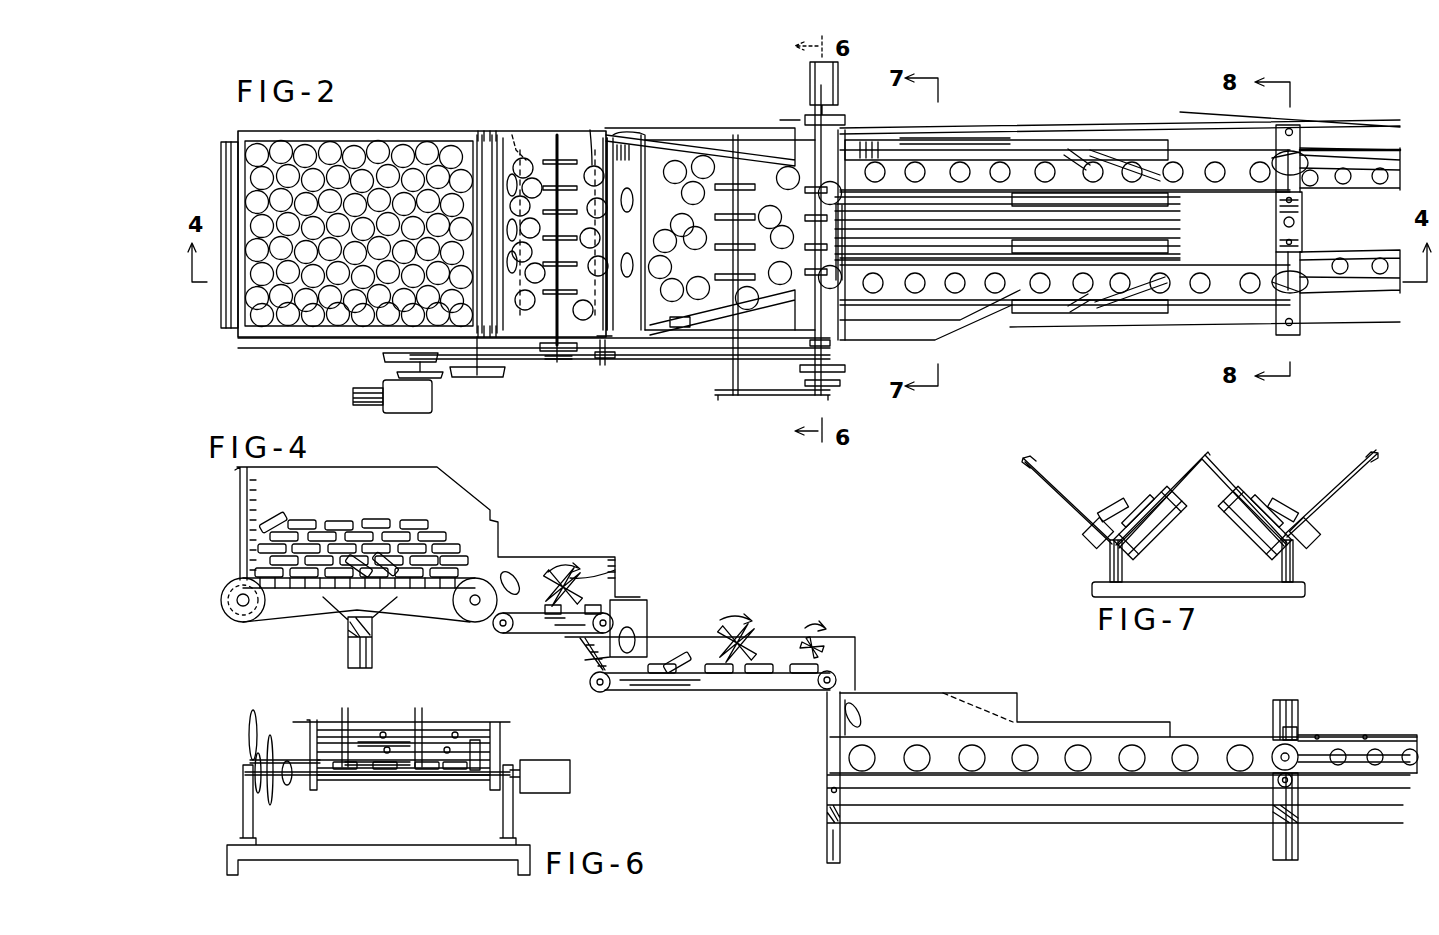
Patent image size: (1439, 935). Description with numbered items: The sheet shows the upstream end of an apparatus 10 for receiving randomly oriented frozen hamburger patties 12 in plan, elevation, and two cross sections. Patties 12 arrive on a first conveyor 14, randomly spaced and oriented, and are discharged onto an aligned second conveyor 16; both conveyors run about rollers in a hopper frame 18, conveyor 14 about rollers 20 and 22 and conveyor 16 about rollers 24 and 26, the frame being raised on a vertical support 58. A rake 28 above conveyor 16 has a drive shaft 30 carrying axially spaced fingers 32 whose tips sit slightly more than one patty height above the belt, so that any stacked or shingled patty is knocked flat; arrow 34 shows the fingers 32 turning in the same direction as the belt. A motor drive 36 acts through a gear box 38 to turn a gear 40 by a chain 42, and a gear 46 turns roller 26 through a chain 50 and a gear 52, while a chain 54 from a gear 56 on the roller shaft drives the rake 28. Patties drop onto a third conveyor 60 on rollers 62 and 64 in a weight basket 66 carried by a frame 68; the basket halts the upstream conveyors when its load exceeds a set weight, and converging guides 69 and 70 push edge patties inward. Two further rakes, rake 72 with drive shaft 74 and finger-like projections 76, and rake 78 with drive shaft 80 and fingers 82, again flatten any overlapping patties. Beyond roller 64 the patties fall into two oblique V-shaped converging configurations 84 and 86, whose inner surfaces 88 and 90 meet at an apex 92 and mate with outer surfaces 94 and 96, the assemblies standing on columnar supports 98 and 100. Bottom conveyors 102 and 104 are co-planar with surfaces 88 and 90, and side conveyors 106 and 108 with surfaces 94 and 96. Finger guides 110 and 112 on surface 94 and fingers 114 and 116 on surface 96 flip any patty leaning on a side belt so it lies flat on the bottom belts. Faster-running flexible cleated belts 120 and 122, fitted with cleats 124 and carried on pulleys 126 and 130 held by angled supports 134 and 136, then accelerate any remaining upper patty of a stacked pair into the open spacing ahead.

In FIG. 2, the apparatus 10 is at (990, 108).
In FIG. 4, the apparatus 10 is at (862, 575).
In FIG. 2, the frozen hamburger patties 12 is at (376, 150).
In FIG. 4, the frozen hamburger patties 12 is at (330, 515).
In FIG. 6, the frozen hamburger patties 12 is at (418, 770).
In FIG. 7, the frozen hamburger patties 12 is at (1128, 505).
In FIG. 2, the first conveyor 14 is at (480, 140).
In FIG. 4, the first conveyor 14 is at (405, 616).
In FIG. 2, the second conveyor 16 is at (508, 143).
In FIG. 4, the second conveyor 16 is at (528, 645).
In FIG. 2, the hopper frame 18 is at (432, 135).
In FIG. 4, the hopper frame 18 is at (348, 472).
In FIG. 4, the roller 20 is at (240, 622).
In FIG. 4, the roller 22 is at (463, 622).
In FIG. 2, the roller 24 is at (512, 135).
In FIG. 4, the roller 24 is at (500, 634).
In FIG. 2, the roller 26 is at (618, 137).
In FIG. 4, the roller 26 is at (622, 612).
In FIG. 2, the rake 28 is at (557, 138).
In FIG. 4, the rake 28 is at (543, 573).
In FIG. 2, the drive shaft 30 is at (567, 140).
In FIG. 4, the drive shaft 30 is at (612, 575).
In FIG. 2, the fingers 32 is at (585, 150).
In FIG. 4, the fingers 32 is at (575, 573).
In FIG. 4, the arrow 34 is at (560, 562).
In FIG. 2, the motor drive 36 is at (360, 385).
In FIG. 2, the gear box 38 is at (404, 410).
In FIG. 2, the gear 40 is at (492, 380).
In FIG. 2, the chain 42 is at (438, 380).
In FIG. 2, the gear 46 is at (390, 355).
In FIG. 2, the chain 50 is at (583, 366).
In FIG. 2, the gear 52 is at (614, 370).
In FIG. 2, the chain 54 is at (578, 360).
In FIG. 2, the gear 56 is at (612, 350).
In FIG. 4, the vertical support 58 is at (348, 648).
In FIG. 2, the third conveyor 60 is at (675, 204).
In FIG. 4, the third conveyor 60 is at (682, 690).
In FIG. 6, the third conveyor 60 is at (452, 775).
In FIG. 4, the roller 62 is at (602, 692).
In FIG. 4, the roller 64 is at (838, 672).
In FIG. 6, the roller 64 is at (338, 778).
In FIG. 2, the weight basket 66 is at (758, 125).
In FIG. 4, the weight basket 66 is at (680, 648).
In FIG. 6, the weight basket 66 is at (495, 740).
In FIG. 4, the frame 68 is at (945, 820).
In FIG. 6, the frame 68 is at (386, 850).
In FIG. 7, the frame 68 is at (1200, 585).
In FIG. 2, the guide 69 is at (758, 158).
In FIG. 6, the guide 69 is at (485, 762).
In FIG. 2, the guide 70 is at (768, 325).
In FIG. 6, the guide 70 is at (320, 775).
In FIG. 2, the rake 72 is at (710, 154).
In FIG. 4, the rake 72 is at (752, 616).
In FIG. 6, the rake 72 is at (425, 725).
In FIG. 2, the drive shaft 74 is at (738, 140).
In FIG. 4, the drive shaft 74 is at (758, 640).
In FIG. 6, the drive shaft 74 is at (400, 740).
In FIG. 2, the finger-like projections 76 is at (740, 190).
In FIG. 4, the finger-like projections 76 is at (722, 650).
In FIG. 6, the finger-like projections 76 is at (350, 732).
In FIG. 2, the rake 78 is at (832, 238).
In FIG. 4, the rake 78 is at (828, 625).
In FIG. 6, the rake 78 is at (340, 730).
In FIG. 2, the drive shaft 80 is at (825, 160).
In FIG. 4, the drive shaft 80 is at (835, 650).
In FIG. 6, the drive shaft 80 is at (370, 770).
In FIG. 2, the fingers 82 is at (840, 258).
In FIG. 4, the fingers 82 is at (810, 642).
In FIG. 6, the fingers 82 is at (445, 750).
In FIG. 2, the V-shaped converging configuration 84 is at (910, 152).
In FIG. 7, the V-shaped converging configuration 84 is at (1297, 450).
In FIG. 2, the V-shaped converging configuration 86 is at (938, 308).
In FIG. 4, the V-shaped converging configuration 86 is at (925, 705).
In FIG. 7, the V-shaped converging configuration 86 is at (1108, 457).
In FIG. 2, the interior surface 88 is at (1007, 228).
In FIG. 7, the interior surface 88 is at (1220, 462).
In FIG. 2, the angular surface 90 is at (990, 250).
In FIG. 4, the angular surface 90 is at (1000, 700).
In FIG. 7, the angular surface 90 is at (1185, 466).
In FIG. 2, the apex 92 is at (1012, 218).
In FIG. 4, the apex 92 is at (955, 693).
In FIG. 7, the apex 92 is at (1205, 452).
In FIG. 2, the surface 94 is at (952, 140).
In FIG. 7, the surface 94 is at (1340, 490).
In FIG. 2, the surface 96 is at (882, 325).
In FIG. 7, the surface 96 is at (1065, 490).
In FIG. 7, the columnar support 98 is at (1105, 570).
In FIG. 7, the columnar support 100 is at (1290, 570).
In FIG. 2, the bottom conveyor 102 is at (1062, 212).
In FIG. 7, the bottom conveyor 102 is at (1250, 490).
In FIG. 2, the bottom conveyor 104 is at (1140, 245).
In FIG. 4, the bottom conveyor 104 is at (1205, 740).
In FIG. 7, the bottom conveyor 104 is at (1160, 490).
In FIG. 2, the side conveyor 106 is at (1000, 140).
In FIG. 7, the side conveyor 106 is at (1315, 545).
In FIG. 2, the side conveyor 108 is at (1050, 330).
In FIG. 7, the side conveyor 108 is at (1090, 545).
In FIG. 2, the finger guide 110 is at (1082, 155).
In FIG. 2, the finger guide 112 is at (1125, 158).
In FIG. 2, the finger 114 is at (1085, 318).
In FIG. 2, the finger 116 is at (1135, 315).
In FIG. 2, the cleated belt 120 is at (1333, 150).
In FIG. 2, the cleated belt 122 is at (1340, 300).
In FIG. 4, the cleated belt 122 is at (1330, 735).
In FIG. 2, the cleats 124 is at (1392, 152).
In FIG. 4, the cleats 124 is at (1365, 735).
In FIG. 2, the pulley 126 is at (1272, 292).
In FIG. 4, the pulley 126 is at (1275, 748).
In FIG. 2, the pulley 130 is at (1278, 152).
In FIG. 2, the angled support 134 is at (1275, 242).
In FIG. 4, the angled support 134 is at (1292, 700).
In FIG. 2, the angled support 136 is at (1276, 208).